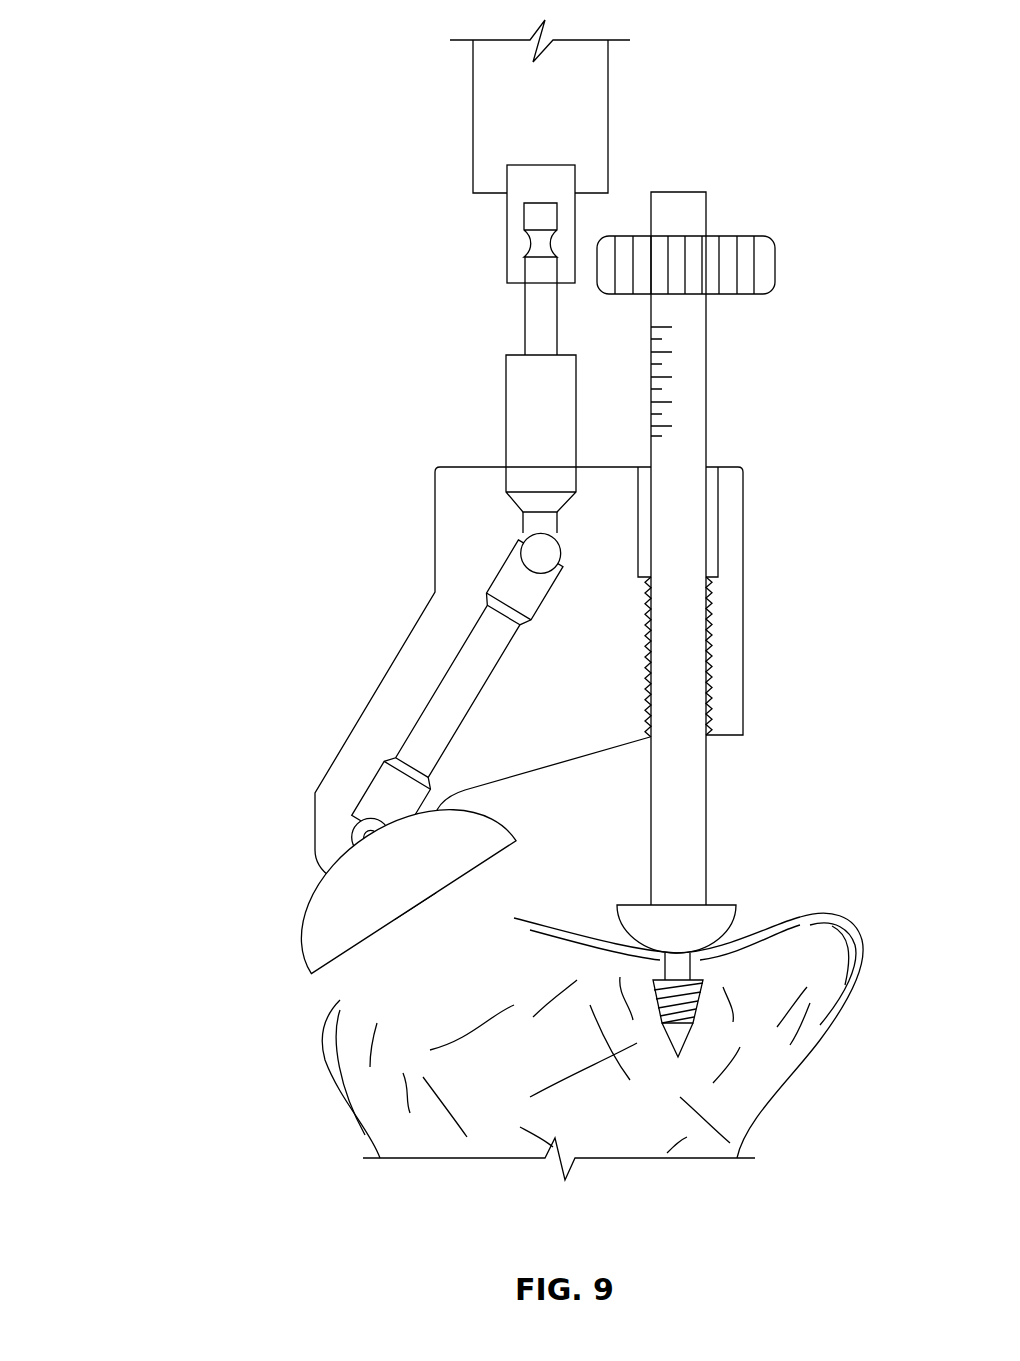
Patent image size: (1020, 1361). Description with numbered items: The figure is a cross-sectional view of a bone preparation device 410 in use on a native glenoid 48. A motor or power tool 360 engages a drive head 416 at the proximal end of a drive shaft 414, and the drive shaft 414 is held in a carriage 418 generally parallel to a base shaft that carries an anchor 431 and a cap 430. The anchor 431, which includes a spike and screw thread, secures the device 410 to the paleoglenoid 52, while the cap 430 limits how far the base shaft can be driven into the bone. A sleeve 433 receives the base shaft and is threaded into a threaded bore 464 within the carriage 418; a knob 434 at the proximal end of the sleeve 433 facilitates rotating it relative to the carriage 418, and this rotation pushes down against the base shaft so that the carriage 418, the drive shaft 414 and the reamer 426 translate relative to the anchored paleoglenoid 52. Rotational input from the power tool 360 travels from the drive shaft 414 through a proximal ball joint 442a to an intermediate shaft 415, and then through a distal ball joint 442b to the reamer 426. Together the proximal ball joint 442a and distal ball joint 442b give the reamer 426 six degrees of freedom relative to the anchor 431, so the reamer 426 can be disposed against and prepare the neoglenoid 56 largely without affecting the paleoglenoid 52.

The bone preparation device 410 is at (152, 50).
The power tool 360 is at (480, 135).
The drive head 416 is at (523, 215).
The drive shaft 414 is at (523, 333).
The knob 434 is at (747, 298).
The sleeve 433 is at (706, 373).
The threaded bore 464 is at (712, 632).
The carriage 418 is at (570, 758).
The intermediate shaft 415 is at (425, 708).
The proximal ball joint 442a is at (520, 533).
The distal ball joint 442b is at (355, 832).
The reamer 426 is at (345, 950).
The cap 430 is at (725, 910).
The anchor 431 is at (666, 1040).
The native glenoid 48 is at (305, 1090).
The neoglenoid 56 is at (400, 980).
The paleoglenoid 52 is at (740, 947).